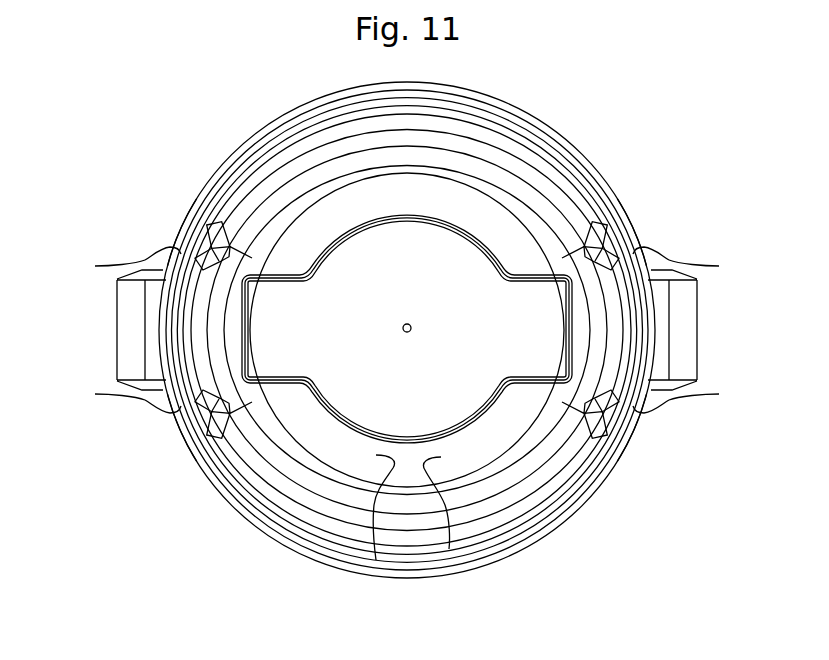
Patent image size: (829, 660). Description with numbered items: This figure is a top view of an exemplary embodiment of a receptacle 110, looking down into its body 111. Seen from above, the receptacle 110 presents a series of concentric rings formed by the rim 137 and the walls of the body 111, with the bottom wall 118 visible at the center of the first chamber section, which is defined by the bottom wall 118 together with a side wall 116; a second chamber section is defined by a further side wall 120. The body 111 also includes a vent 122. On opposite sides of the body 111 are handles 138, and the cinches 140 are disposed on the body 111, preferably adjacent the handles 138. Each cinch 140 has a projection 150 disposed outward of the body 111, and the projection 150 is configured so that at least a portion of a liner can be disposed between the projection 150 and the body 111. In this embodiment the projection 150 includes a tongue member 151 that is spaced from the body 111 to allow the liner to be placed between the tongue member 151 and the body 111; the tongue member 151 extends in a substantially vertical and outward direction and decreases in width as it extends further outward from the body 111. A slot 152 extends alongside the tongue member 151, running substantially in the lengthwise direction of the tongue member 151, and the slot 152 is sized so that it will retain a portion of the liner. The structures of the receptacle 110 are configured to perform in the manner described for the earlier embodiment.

The receptacle 110 is at (643, 105).
The body 111 is at (617, 198).
The rim 137 is at (532, 117).
The vent 122 is at (267, 277).
The bottom wall 118 is at (421, 300).
The side wall 120 is at (370, 504).
The side wall 116 is at (447, 498).
The handle 138 is at (116, 328).
The cinch 140 is at (148, 248).
The projection 150 is at (153, 258).
The slot 152 is at (407, 328).
The tongue member 151 is at (163, 247).